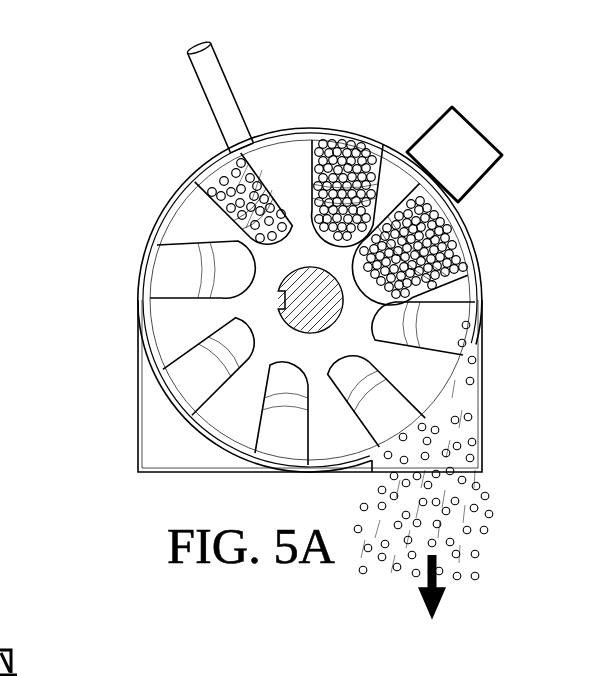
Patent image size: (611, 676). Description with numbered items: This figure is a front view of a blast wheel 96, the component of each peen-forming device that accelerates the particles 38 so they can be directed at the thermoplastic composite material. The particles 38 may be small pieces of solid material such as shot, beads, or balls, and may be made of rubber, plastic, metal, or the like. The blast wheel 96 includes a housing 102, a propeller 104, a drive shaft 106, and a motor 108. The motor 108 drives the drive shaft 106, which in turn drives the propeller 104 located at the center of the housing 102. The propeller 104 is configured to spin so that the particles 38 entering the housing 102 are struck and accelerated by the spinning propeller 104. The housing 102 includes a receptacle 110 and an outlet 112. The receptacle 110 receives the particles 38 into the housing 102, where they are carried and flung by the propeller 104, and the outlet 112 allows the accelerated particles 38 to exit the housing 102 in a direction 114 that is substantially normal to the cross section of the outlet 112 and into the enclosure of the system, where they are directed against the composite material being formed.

The blast wheel 96 is at (112, 101).
The particles 38 is at (405, 205).
The housing 102 is at (139, 348).
The propeller 104 is at (182, 263).
The drive shaft 106 is at (284, 300).
The motor 108 is at (473, 122).
The receptacle 110 is at (232, 161).
The outlet 112 is at (422, 477).
The direction 114 is at (436, 577).